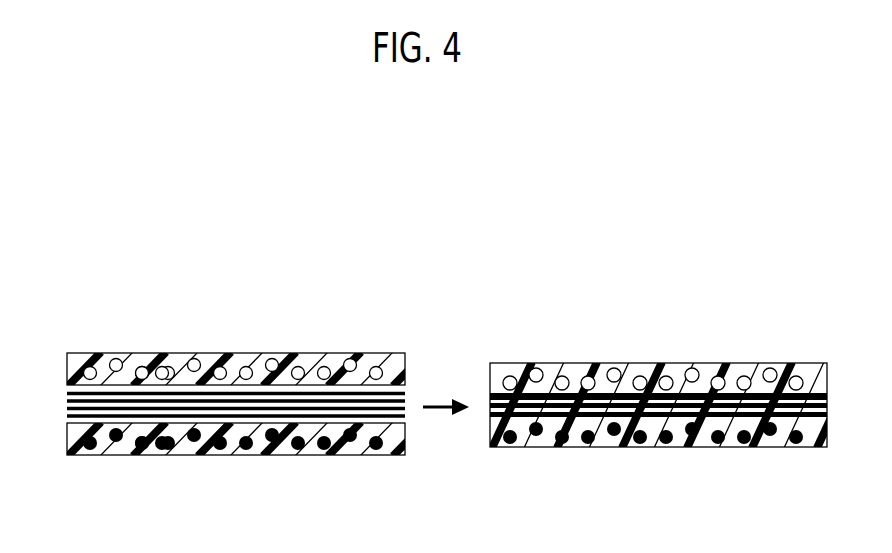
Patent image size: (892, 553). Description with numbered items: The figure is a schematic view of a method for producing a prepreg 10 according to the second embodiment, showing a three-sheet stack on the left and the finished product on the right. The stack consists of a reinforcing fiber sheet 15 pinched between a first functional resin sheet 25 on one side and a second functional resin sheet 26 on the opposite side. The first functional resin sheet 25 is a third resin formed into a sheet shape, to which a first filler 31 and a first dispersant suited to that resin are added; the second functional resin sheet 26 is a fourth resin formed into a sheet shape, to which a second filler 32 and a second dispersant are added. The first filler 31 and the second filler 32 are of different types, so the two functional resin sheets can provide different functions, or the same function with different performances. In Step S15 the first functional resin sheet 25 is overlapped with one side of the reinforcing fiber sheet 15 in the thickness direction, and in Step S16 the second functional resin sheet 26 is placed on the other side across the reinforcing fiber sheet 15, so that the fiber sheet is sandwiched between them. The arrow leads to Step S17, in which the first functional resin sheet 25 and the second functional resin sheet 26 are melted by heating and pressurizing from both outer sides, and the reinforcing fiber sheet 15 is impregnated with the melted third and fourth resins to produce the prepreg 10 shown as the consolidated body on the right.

The prepreg 10 is at (733, 333).
The reinforcing fiber sheet 15 is at (67, 409).
The first functional resin sheet 25 is at (67, 379).
The second functional resin sheet 26 is at (67, 441).
The first filler 31 is at (161, 367).
The second filler 32 is at (161, 450).
The step of disposing the first functional resin sheet S15 is at (310, 277).
The step of disposing the second functional resin sheet S16 is at (221, 383).
The step of heating and pressurizing S17 is at (680, 288).